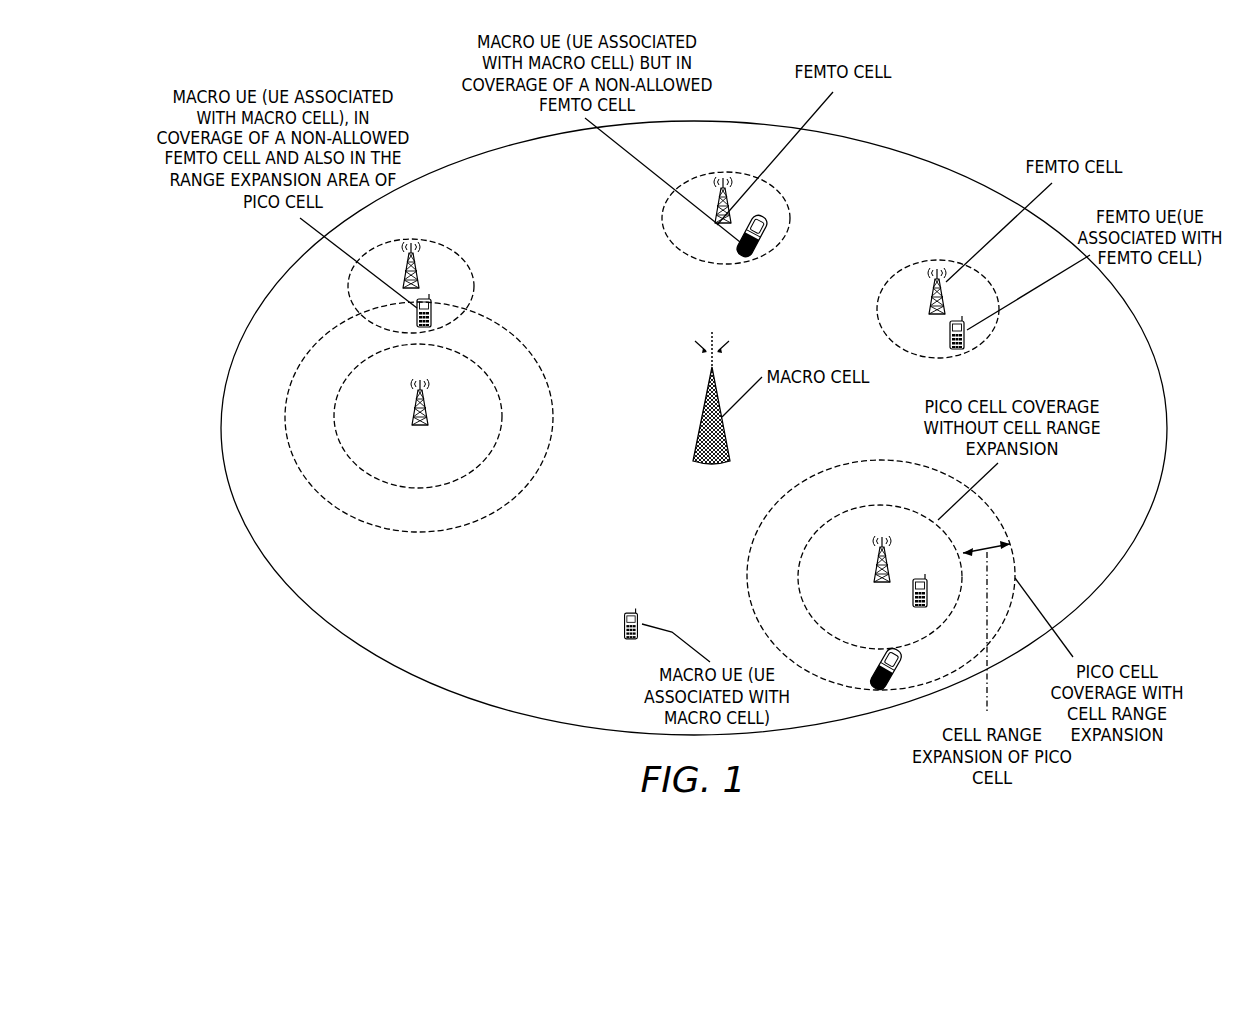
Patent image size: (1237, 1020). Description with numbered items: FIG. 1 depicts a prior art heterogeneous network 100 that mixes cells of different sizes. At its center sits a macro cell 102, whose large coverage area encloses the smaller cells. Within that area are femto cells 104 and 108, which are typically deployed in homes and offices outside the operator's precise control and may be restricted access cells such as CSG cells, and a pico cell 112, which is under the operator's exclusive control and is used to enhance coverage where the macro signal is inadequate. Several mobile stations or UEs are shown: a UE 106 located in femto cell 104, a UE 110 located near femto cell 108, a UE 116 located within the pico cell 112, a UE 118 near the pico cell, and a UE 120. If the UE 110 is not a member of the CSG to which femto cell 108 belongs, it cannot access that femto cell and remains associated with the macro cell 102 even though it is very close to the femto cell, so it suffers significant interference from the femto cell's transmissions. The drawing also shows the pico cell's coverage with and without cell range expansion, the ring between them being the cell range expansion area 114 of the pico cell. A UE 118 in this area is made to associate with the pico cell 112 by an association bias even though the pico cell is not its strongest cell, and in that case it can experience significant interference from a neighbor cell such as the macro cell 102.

The Heterogeneous network 100 is at (920, 158).
The macro cell 102 is at (702, 418).
The femto cell 104 is at (945, 298).
The UE 106 is at (965, 350).
The femto cell 108 is at (768, 178).
The UE 110 is at (755, 257).
The pico cell 112 is at (880, 505).
The pico cell coverage with cell range expansion 114 is at (882, 460).
The UE 116 is at (912, 600).
The UE 118 is at (885, 660).
The UE 120 is at (426, 298).